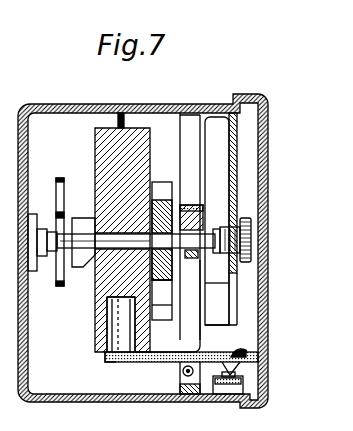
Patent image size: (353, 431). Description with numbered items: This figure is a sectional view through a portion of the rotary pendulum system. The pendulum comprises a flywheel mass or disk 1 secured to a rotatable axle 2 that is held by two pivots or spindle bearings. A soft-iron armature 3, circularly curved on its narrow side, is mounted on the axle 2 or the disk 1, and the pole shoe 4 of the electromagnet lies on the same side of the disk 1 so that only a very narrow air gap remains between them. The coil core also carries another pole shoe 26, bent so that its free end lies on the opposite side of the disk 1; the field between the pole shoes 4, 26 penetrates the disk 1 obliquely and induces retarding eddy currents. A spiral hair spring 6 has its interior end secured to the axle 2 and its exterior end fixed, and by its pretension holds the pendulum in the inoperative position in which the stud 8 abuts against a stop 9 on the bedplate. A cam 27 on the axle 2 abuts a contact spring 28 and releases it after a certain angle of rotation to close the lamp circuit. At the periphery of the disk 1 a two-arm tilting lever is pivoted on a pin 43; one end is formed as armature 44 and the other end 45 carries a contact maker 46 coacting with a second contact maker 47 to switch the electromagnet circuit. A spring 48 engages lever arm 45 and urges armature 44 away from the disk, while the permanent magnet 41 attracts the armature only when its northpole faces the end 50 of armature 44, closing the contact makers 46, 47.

The flywheel mass or disk 1 is at (97, 143).
The rotatable axle 2 is at (53, 242).
The soft-iron armature 3 is at (161, 199).
The pole shoe 4 is at (158, 297).
The spiral hair spring 6 is at (62, 202).
The stud 8 is at (121, 114).
The stop 9 is at (134, 251).
The pole shoe 26 is at (86, 272).
The cam 27 is at (191, 256).
The contact spring 28 is at (203, 171).
The permanent magnet 41 is at (110, 342).
The pin 43 is at (182, 373).
The armature 44 is at (104, 356).
The lever arm 45 is at (234, 362).
The contact maker 46 is at (232, 351).
The second contact maker 47 is at (244, 378).
The spring 48 is at (244, 352).
The end of armature 50 is at (120, 362).